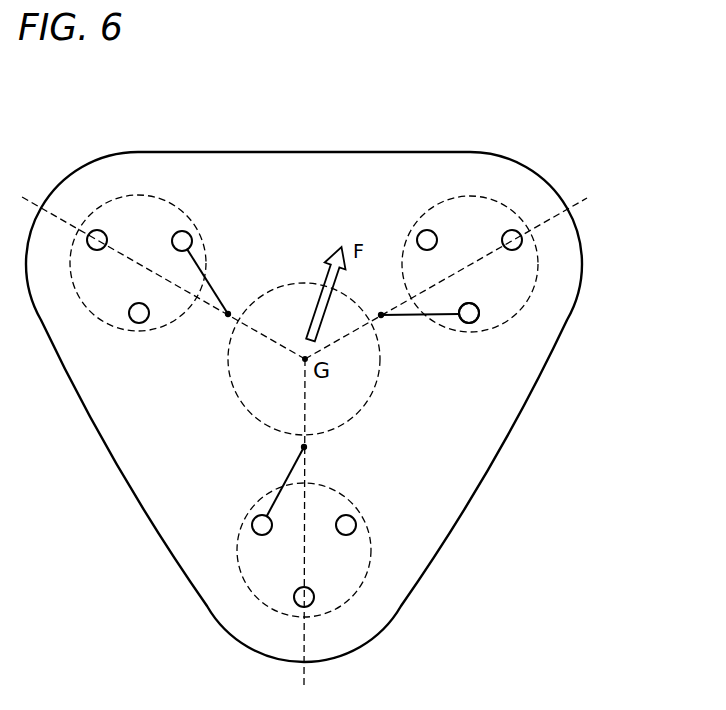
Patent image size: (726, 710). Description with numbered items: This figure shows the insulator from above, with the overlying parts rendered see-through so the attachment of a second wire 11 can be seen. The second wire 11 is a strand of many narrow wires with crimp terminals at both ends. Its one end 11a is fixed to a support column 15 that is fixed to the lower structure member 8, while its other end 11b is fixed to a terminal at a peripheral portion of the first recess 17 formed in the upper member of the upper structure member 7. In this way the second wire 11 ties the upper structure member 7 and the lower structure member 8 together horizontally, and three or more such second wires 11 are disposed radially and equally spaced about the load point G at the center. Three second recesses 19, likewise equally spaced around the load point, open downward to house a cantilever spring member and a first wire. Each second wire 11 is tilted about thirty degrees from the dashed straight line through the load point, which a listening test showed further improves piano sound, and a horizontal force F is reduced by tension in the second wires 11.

The upper structure member 7 is at (440, 151).
The lower structure member 8 is at (304, 372).
The second wire 11 is at (227, 311).
The one end 11a is at (462, 310).
The other end 11b is at (381, 318).
The support column 15 is at (469, 323).
The first recess 17 is at (343, 422).
The second recess 19 is at (530, 292).